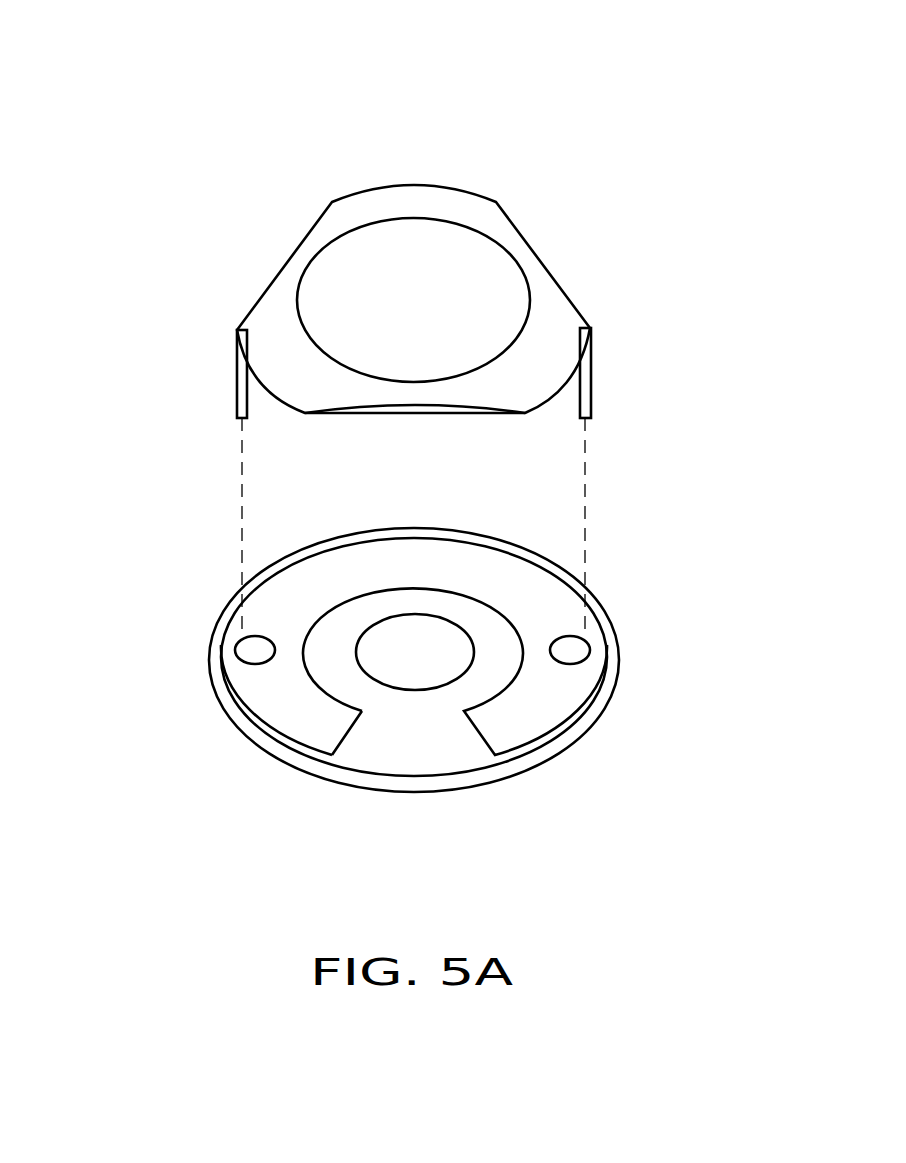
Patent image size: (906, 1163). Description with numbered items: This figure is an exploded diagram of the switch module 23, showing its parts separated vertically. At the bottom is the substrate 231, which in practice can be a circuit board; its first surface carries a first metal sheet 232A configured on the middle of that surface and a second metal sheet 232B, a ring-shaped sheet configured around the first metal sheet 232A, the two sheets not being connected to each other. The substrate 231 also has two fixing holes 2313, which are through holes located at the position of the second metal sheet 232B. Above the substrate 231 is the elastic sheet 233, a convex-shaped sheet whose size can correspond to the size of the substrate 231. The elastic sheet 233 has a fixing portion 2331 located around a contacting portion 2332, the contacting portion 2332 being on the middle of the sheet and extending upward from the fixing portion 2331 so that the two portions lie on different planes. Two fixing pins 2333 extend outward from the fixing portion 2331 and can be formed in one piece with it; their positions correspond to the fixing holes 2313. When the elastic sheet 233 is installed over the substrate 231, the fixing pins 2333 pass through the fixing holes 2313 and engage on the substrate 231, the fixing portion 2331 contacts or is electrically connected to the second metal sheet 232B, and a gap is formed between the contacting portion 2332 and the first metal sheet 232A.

The switch module 23 is at (418, 88).
The substrate 231 is at (220, 637).
The fixing holes 2313 is at (245, 658).
The first metal sheet 232A is at (413, 658).
The second metal sheet 232B is at (360, 567).
The elastic sheet 233 is at (473, 192).
The fixing portion 2331 is at (550, 307).
The contacting portion 2332 is at (345, 283).
The fixing pins 2333 is at (247, 395).